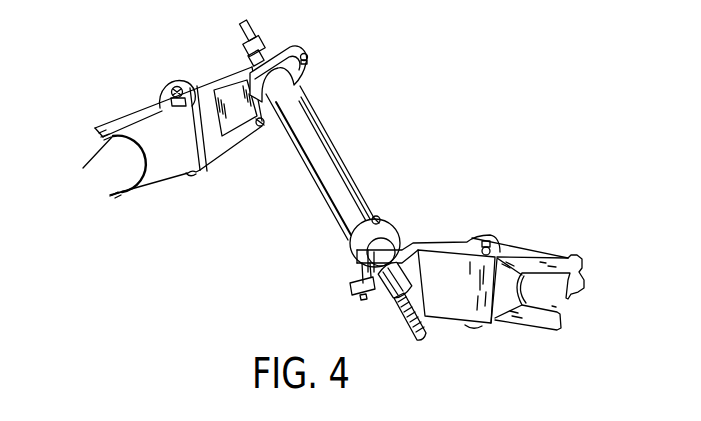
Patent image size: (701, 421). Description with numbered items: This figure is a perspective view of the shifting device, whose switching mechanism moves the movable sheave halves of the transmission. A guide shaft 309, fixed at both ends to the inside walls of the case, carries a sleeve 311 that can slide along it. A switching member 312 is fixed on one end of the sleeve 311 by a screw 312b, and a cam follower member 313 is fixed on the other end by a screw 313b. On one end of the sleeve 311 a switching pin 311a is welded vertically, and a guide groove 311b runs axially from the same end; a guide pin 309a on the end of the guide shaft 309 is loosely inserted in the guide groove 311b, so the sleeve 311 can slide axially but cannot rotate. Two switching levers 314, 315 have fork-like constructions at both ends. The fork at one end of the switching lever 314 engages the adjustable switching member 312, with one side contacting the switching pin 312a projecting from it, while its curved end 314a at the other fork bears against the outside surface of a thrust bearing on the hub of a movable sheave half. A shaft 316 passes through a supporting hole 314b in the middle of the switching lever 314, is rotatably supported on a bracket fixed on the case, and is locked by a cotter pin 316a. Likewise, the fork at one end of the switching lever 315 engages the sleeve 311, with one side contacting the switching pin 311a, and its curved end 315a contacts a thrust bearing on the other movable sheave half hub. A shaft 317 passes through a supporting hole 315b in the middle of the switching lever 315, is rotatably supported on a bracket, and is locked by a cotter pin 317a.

The guide shaft 309 is at (393, 302).
The guide pin 309a is at (382, 297).
The sleeve 311 is at (332, 158).
The switching pin 311a is at (352, 283).
The guide groove 311b is at (413, 247).
The switching member 312 is at (300, 82).
The switching pin 312a is at (260, 126).
The screw 312b is at (309, 59).
The cam follower member 313 is at (350, 247).
The screw 313b is at (377, 215).
The switching lever 314 is at (161, 166).
The curved end 314a is at (108, 197).
The supporting hole 314b is at (162, 109).
The switching lever 315 is at (442, 294).
The curved end 315a is at (581, 279).
The supporting hole 315b is at (519, 291).
The shaft 316 is at (174, 84).
The cotter pin 316a is at (184, 88).
The shaft 317 is at (492, 239).
The cotter pin 317a is at (508, 244).